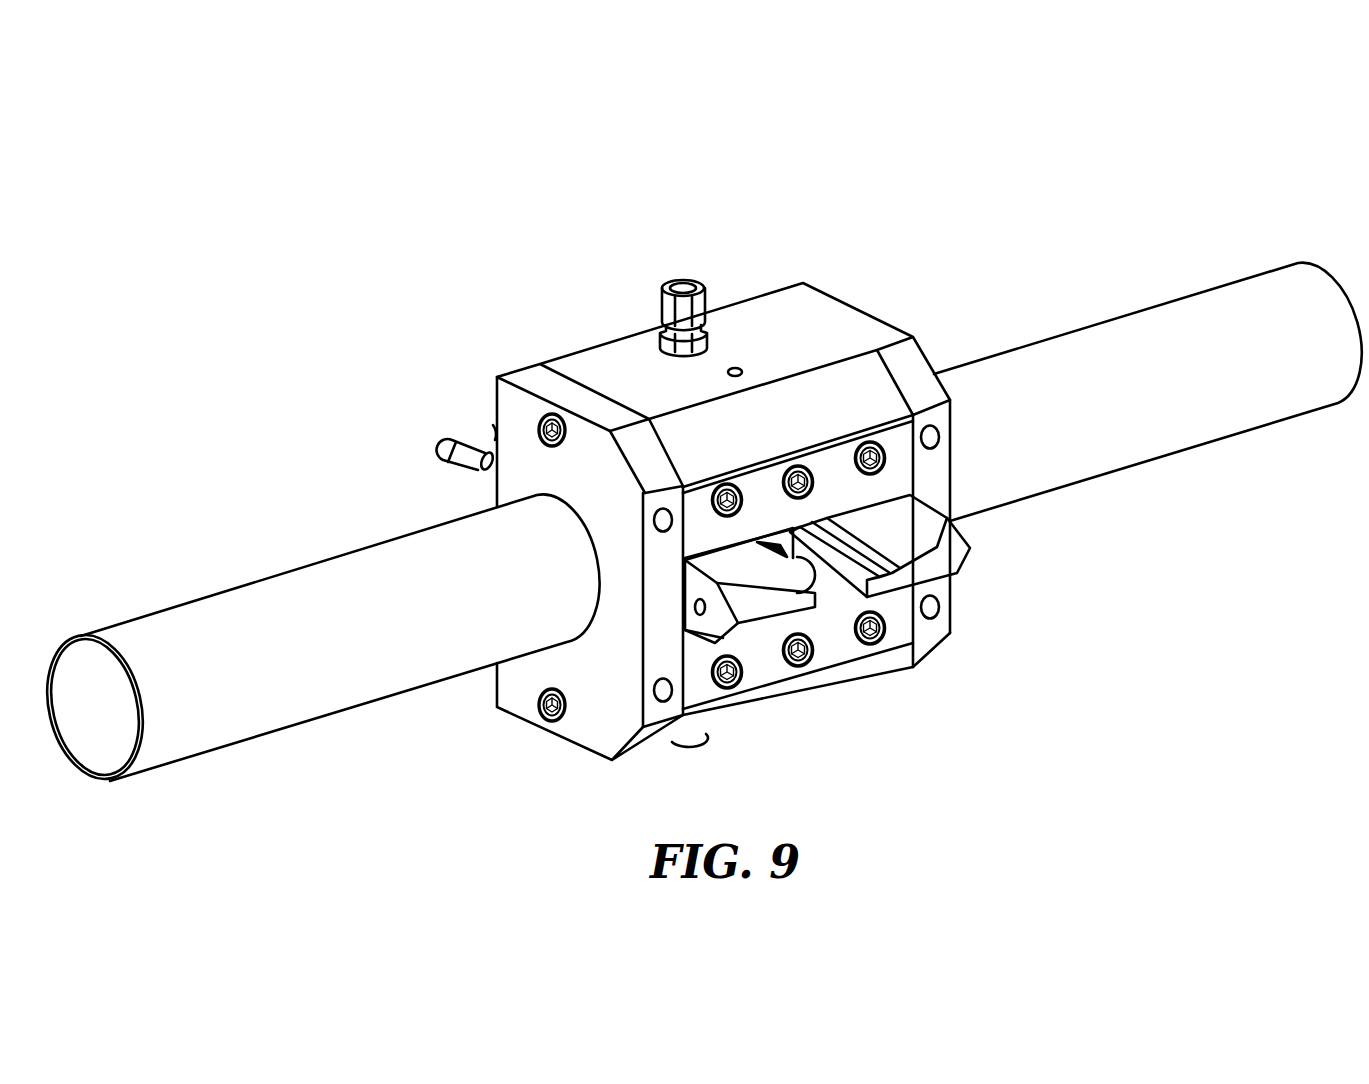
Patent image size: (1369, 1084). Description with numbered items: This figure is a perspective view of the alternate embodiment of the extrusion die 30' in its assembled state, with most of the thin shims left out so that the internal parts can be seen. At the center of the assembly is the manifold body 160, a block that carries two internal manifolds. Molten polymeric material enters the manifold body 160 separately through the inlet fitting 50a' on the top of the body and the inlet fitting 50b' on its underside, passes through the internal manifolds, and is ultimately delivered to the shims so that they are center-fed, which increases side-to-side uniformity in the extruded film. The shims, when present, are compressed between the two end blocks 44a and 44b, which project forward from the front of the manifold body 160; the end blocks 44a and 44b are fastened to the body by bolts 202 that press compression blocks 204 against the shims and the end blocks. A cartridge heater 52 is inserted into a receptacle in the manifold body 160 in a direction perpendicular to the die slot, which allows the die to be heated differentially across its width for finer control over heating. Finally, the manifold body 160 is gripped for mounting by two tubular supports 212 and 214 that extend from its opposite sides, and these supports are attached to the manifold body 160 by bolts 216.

The extrusion die 30' is at (698, 487).
The manifold body 160 is at (747, 297).
The inlet fitting 50a' is at (636, 317).
The inlet fitting 50b' is at (682, 777).
The support 212 is at (257, 592).
The support 214 is at (1065, 345).
The cartridge heater 52 is at (463, 458).
The end block 44a is at (747, 628).
The end block 44b is at (950, 546).
The bolt 202 is at (877, 639).
The compression block 204 is at (828, 652).
The bolt 216 is at (548, 722).